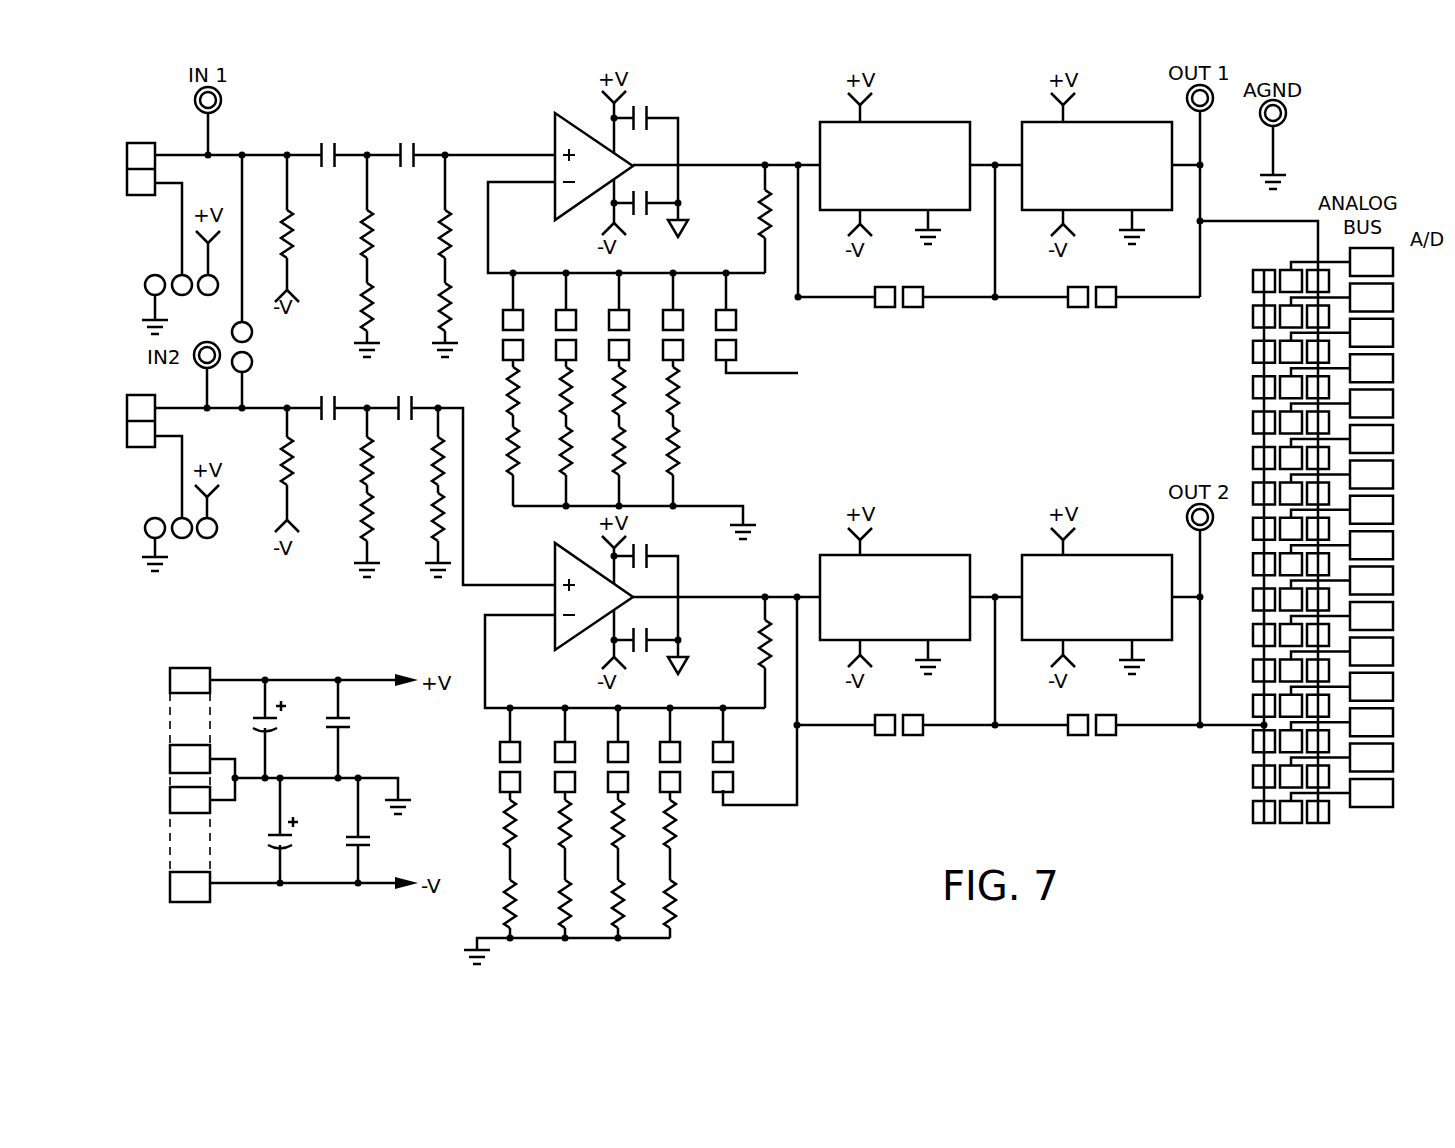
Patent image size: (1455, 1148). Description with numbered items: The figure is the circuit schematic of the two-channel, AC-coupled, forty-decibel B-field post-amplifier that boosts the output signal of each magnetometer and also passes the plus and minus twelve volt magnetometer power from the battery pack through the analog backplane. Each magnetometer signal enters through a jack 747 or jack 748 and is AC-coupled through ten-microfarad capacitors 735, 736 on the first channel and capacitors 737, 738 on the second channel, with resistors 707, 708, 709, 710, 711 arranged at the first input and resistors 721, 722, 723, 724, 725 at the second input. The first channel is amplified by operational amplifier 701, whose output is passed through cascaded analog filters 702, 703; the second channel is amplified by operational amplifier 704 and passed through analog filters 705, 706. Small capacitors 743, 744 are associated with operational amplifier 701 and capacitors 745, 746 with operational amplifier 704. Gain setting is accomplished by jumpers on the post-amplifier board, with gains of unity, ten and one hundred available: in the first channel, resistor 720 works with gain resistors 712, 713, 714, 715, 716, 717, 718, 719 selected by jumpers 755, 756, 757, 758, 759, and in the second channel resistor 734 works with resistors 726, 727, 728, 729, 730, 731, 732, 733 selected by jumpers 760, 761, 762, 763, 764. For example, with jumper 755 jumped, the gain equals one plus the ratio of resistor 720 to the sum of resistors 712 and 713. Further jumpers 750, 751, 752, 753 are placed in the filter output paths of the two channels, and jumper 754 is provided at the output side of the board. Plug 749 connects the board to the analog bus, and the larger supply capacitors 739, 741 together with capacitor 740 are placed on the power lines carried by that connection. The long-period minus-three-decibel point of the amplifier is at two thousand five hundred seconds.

The operational amplifier 701 is at (553, 128).
The analog filter 702 is at (927, 122).
The analog filter 703 is at (1102, 122).
The operational amplifier 704 is at (551, 569).
The analog filter 705 is at (913, 553).
The analog filter 706 is at (1105, 553).
The resistor 707 is at (292, 233).
The resistor 708 is at (370, 233).
The resistor 709 is at (364, 300).
The resistor 710 is at (443, 226).
The resistor 711 is at (443, 293).
The resistor 712 is at (508, 398).
The resistor 713 is at (512, 467).
The resistor 714 is at (564, 398).
The resistor 715 is at (565, 465).
The resistor 716 is at (617, 398).
The resistor 717 is at (618, 465).
The resistor 718 is at (671, 398).
The resistor 719 is at (672, 465).
The resistor 720 is at (770, 212).
The resistor 721 is at (283, 474).
The resistor 722 is at (364, 443).
The resistor 723 is at (364, 521).
The resistor 724 is at (440, 443).
The resistor 725 is at (440, 522).
The resistor 726 is at (507, 830).
The resistor 727 is at (507, 888).
The resistor 728 is at (562, 830).
The resistor 729 is at (566, 893).
The resistor 730 is at (615, 830).
The resistor 731 is at (615, 893).
The resistor 732 is at (668, 830).
The resistor 733 is at (672, 896).
The resistor 734 is at (762, 650).
The capacitor 735 is at (335, 150).
The capacitor 736 is at (413, 150).
The capacitor 737 is at (321, 400).
The capacitor 738 is at (397, 400).
The capacitor 739 is at (257, 718).
The capacitor 740 is at (348, 720).
The capacitor 741 is at (272, 834).
The capacitor 743 is at (643, 218).
The capacitor 744 is at (655, 111).
The capacitor 745 is at (650, 657).
The capacitor 746 is at (653, 549).
The jack 747 is at (140, 143).
The jack 748 is at (146, 452).
The plug 749 is at (167, 668).
The jumper 750 is at (895, 309).
The jumper 751 is at (1097, 309).
The jumper 752 is at (897, 737).
The jumper 753 is at (1097, 737).
The jumper 754 is at (1329, 831).
The jumper 755 is at (503, 334).
The jumper 756 is at (557, 337).
The jumper 757 is at (608, 337).
The jumper 758 is at (662, 337).
The jumper 759 is at (737, 337).
The jumper 760 is at (498, 768).
The jumper 761 is at (553, 767).
The jumper 762 is at (608, 768).
The jumper 763 is at (662, 768).
The jumper 764 is at (733, 764).